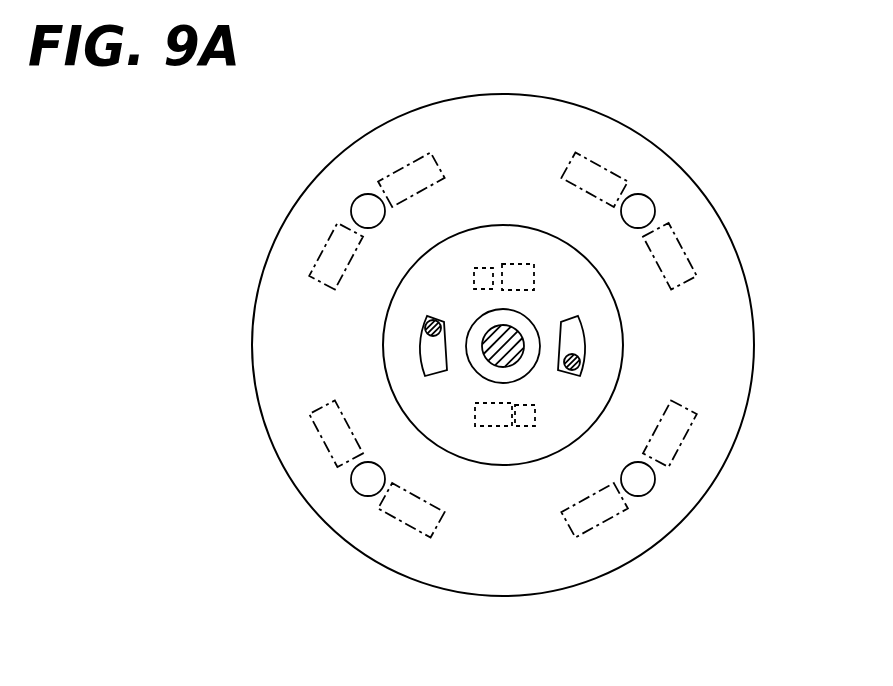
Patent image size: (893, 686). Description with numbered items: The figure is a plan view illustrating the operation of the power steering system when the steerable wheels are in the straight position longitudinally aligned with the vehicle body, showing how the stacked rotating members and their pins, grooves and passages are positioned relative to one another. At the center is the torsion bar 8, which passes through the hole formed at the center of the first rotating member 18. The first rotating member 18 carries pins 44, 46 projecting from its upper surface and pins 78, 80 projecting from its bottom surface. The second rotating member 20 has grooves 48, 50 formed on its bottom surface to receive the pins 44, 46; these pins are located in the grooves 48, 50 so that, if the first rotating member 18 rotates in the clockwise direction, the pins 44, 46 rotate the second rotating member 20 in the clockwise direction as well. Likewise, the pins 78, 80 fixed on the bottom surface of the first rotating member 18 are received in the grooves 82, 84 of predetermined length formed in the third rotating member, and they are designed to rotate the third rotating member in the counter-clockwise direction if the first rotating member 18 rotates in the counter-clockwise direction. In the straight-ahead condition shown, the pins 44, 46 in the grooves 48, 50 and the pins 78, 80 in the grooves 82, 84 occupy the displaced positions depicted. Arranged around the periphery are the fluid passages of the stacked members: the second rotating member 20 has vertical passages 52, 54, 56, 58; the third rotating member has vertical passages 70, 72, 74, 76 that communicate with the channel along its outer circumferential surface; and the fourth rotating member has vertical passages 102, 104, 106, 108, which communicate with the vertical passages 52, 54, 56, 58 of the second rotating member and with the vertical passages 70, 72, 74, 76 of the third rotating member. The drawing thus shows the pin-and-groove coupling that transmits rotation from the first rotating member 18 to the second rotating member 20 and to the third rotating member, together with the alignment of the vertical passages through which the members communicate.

The torsion bar 8 is at (505, 338).
The first rotating member 18 is at (630, 341).
The second rotating member 20 is at (747, 407).
The pin 44 is at (428, 323).
The pin 46 is at (580, 367).
The groove 48 is at (428, 357).
The groove 50 is at (570, 333).
The vertical passage 52 is at (683, 448).
The vertical passage 54 is at (600, 162).
The vertical passage 56 is at (397, 168).
The vertical passage 58 is at (318, 438).
The vertical passage 70 is at (600, 528).
The vertical passage 72 is at (683, 243).
The vertical passage 74 is at (321, 248).
The vertical passage 76 is at (394, 524).
The pin 78 is at (488, 266).
The pin 80 is at (520, 428).
The groove 82 is at (517, 264).
The groove 84 is at (500, 428).
The vertical passage 102 is at (640, 482).
The vertical passage 104 is at (640, 208).
The vertical passage 106 is at (364, 213).
The vertical passage 108 is at (360, 482).